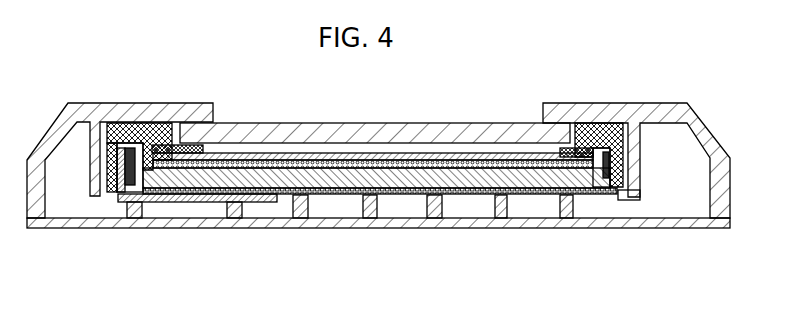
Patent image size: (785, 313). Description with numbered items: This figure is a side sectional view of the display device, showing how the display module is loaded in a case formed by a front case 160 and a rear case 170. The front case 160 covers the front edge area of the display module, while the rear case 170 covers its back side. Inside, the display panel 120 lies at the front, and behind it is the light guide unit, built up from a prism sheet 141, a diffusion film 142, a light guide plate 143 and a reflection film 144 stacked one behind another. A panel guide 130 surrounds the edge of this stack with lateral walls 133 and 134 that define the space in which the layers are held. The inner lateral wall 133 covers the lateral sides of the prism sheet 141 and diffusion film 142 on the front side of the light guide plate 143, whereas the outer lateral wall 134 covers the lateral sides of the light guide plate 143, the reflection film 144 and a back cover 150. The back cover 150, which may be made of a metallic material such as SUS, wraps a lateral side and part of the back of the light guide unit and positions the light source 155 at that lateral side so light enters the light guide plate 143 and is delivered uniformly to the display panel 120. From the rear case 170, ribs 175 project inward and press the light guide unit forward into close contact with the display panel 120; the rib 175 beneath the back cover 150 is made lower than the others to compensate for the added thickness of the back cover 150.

The display panel 120 is at (377, 130).
The panel guide 130 is at (150, 132).
The lateral wall 133 is at (156, 156).
The lateral wall 134 is at (112, 168).
The prism sheet 141 is at (492, 165).
The diffusion film 142 is at (452, 158).
The light guide plate 143 is at (481, 183).
The reflection film 144 is at (537, 196).
The back cover 150 is at (198, 202).
The light source 155 is at (132, 148).
The front case 160 is at (632, 108).
The rear case 170 is at (415, 228).
The rib 175 is at (368, 203).